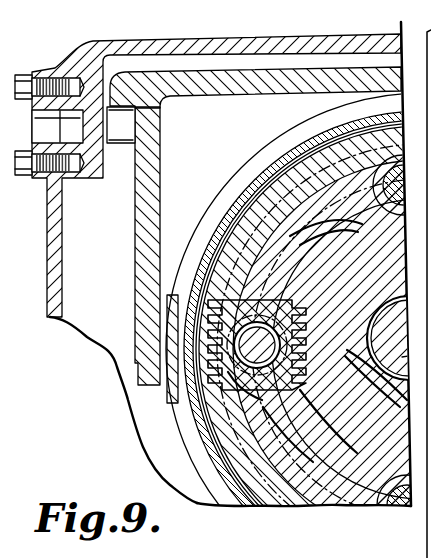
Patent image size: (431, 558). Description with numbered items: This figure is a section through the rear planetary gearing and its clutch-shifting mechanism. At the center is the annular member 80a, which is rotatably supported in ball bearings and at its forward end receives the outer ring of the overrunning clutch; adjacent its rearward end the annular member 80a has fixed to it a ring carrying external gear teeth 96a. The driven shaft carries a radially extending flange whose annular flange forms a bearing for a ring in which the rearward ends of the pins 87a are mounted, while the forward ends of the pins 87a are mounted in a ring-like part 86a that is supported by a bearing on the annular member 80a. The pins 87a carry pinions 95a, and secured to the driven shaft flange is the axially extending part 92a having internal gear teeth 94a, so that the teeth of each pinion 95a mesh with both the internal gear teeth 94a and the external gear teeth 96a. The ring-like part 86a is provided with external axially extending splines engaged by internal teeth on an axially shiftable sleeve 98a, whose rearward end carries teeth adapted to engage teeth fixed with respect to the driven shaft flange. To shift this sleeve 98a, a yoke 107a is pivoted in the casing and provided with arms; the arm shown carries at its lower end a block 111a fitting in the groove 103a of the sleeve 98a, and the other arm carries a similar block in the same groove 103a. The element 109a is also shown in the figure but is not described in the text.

The annular member 80a is at (397, 397).
The ring-like part 86a is at (303, 214).
The pins 87a is at (298, 403).
The axially extending part 92a is at (278, 170).
The internal gear teeth 94a is at (243, 298).
The pinions 95a is at (261, 308).
The external gear teeth 96a is at (243, 372).
The axially shiftable sleeve 98a is at (237, 190).
The groove 103a is at (223, 493).
The yoke 107a is at (280, 88).
The flange column 109a is at (157, 196).
The block 111a is at (163, 400).